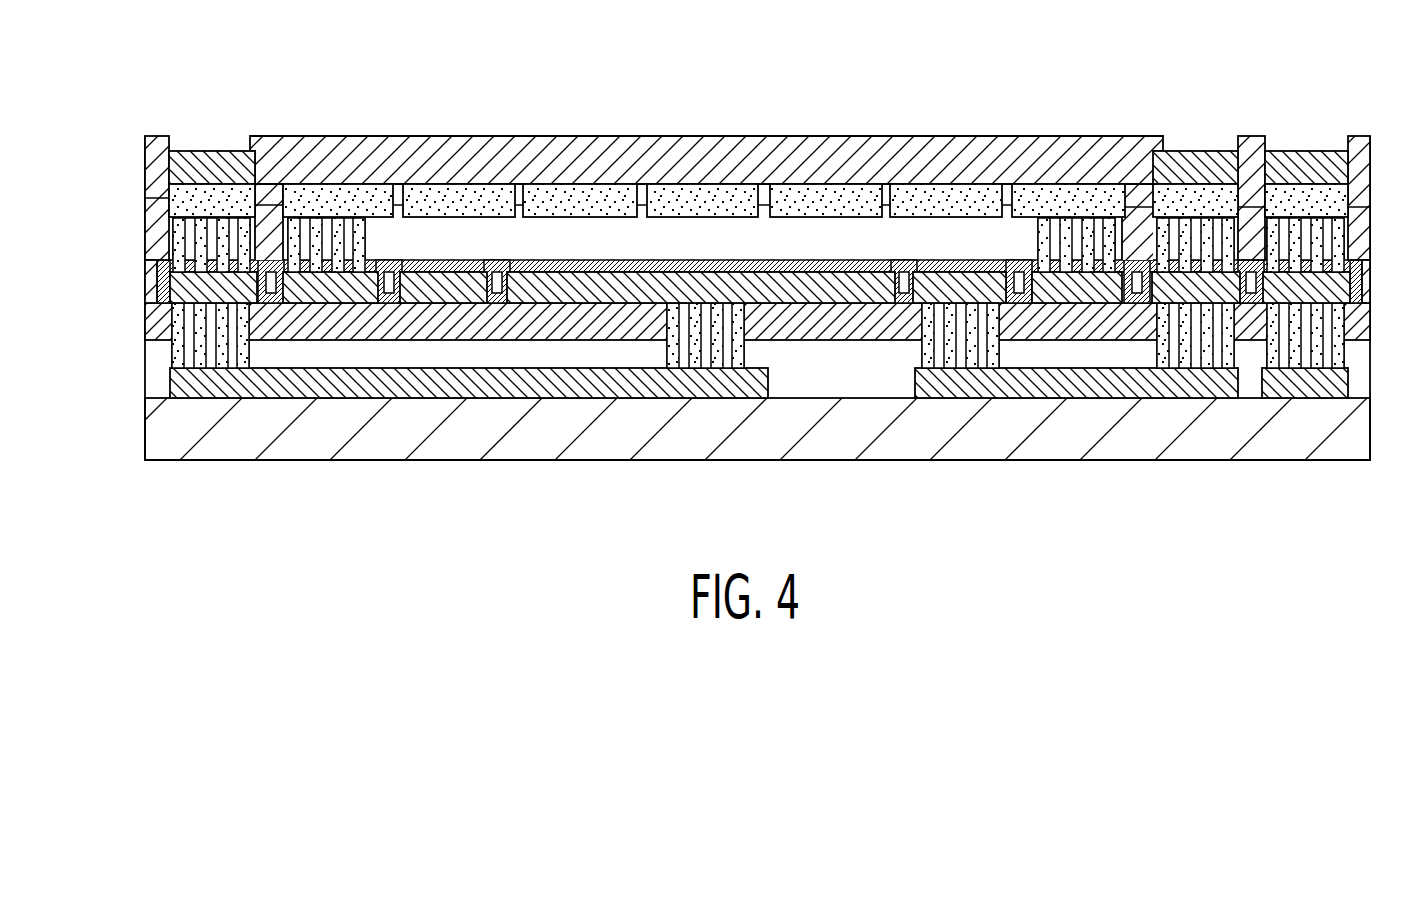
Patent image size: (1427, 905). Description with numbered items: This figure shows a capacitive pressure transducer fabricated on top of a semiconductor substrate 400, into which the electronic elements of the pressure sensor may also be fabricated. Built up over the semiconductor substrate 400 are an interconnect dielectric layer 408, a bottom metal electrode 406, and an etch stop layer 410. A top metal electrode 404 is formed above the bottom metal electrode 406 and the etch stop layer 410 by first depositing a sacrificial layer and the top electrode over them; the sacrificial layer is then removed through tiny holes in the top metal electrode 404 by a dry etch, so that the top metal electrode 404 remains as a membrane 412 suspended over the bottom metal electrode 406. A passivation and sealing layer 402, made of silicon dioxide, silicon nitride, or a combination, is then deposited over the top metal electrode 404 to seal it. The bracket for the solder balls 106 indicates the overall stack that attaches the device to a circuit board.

The solder balls 106 is at (127, 135).
The semiconductor substrate 400 is at (1370, 460).
The passivation and sealing layer 402 is at (1153, 138).
The top metal electrode 404 is at (287, 198).
The bottom metal electrode 406 is at (842, 295).
The interconnect dielectric layer 408 is at (1117, 353).
The etch stop layer 410 is at (555, 275).
The membrane 412 is at (1163, 107).